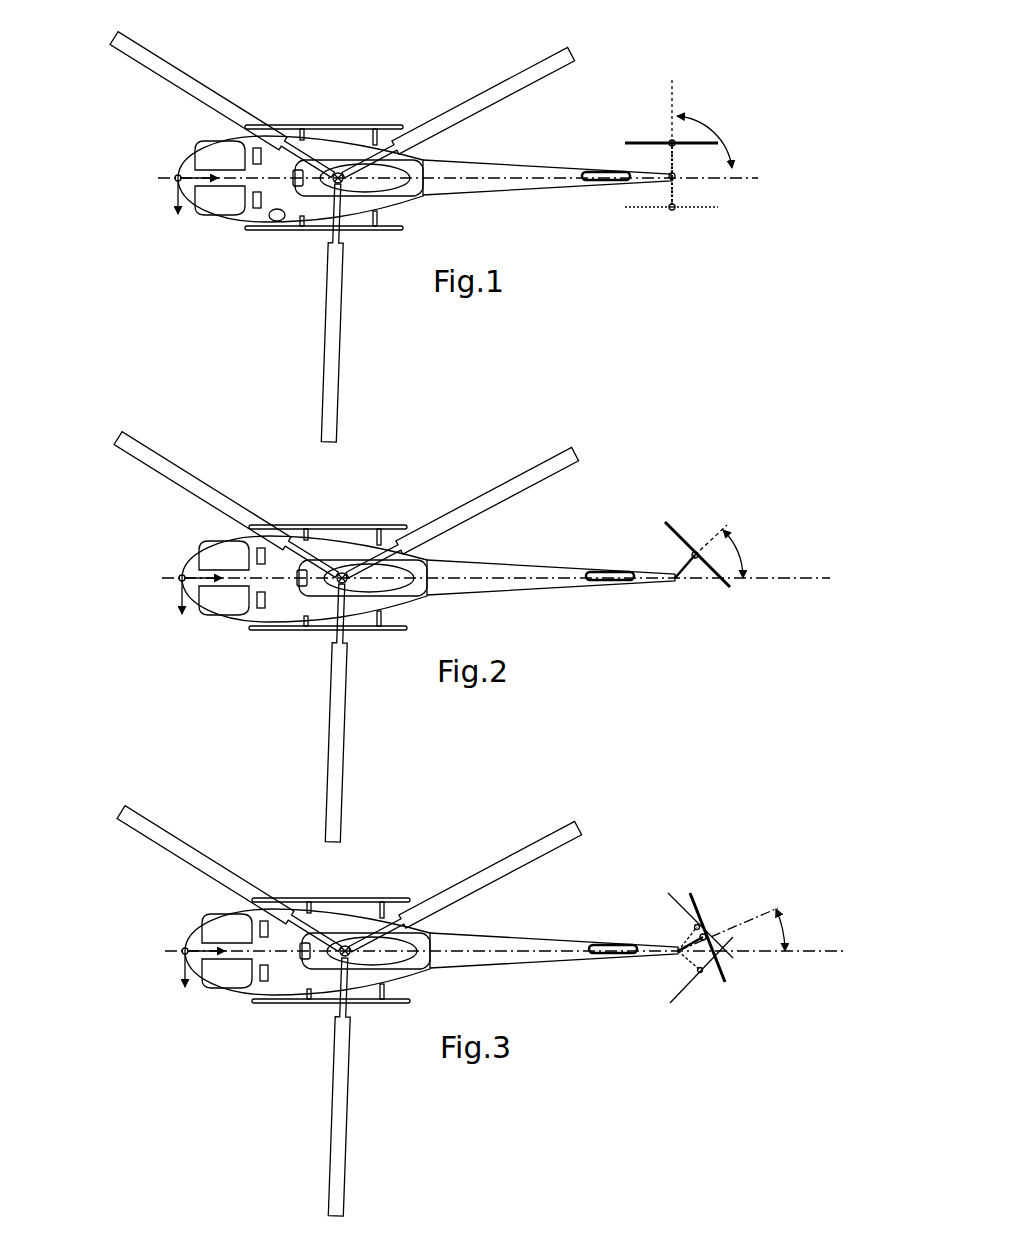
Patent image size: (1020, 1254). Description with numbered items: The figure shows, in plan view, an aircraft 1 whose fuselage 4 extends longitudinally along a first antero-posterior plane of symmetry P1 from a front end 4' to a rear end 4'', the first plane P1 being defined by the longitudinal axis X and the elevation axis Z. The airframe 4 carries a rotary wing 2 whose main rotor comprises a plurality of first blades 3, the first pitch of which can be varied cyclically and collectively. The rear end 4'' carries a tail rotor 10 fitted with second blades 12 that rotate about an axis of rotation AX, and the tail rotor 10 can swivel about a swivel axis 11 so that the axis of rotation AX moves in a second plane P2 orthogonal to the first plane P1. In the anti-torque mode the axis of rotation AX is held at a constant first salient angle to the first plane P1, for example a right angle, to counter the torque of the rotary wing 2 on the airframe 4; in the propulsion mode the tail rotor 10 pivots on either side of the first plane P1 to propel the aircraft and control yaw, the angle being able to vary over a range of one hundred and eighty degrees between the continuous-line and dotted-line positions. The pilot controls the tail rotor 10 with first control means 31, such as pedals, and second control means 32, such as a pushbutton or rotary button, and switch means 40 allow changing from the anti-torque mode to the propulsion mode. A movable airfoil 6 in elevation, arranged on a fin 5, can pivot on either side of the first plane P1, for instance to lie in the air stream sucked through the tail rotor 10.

In FIG. 1, the aircraft 1 is at (145, 252).
In FIG. 2, the aircraft 1 is at (158, 664).
In FIG. 3, the aircraft 1 is at (163, 1065).
In FIG. 1, the rotary wing 2 is at (210, 52).
In FIG. 2, the rotary wing 2 is at (208, 448).
In FIG. 3, the rotary wing 2 is at (211, 828).
In FIG. 1, the first blade 3 is at (506, 80).
In FIG. 2, the first blade 3 is at (514, 470).
In FIG. 3, the first blade 3 is at (517, 846).
In FIG. 1, the fuselage 4 is at (393, 181).
In FIG. 1, the front end 4' is at (269, 181).
In FIG. 1, the rear end 4'' is at (547, 217).
In FIG. 1, the fin 5 is at (590, 186).
In FIG. 1, the movable airfoil 6 is at (628, 188).
In FIG. 2, the movable airfoil 6 is at (598, 583).
In FIG. 3, the movable airfoil 6 is at (600, 956).
In FIG. 1, the tail rotor 10 is at (716, 92).
In FIG. 2, the tail rotor 10 is at (720, 490).
In FIG. 1, the swivel axis 11 is at (666, 172).
In FIG. 2, the swivel axis 11 is at (677, 582).
In FIG. 3, the swivel axis 11 is at (680, 957).
In FIG. 1, the second blade 12 is at (657, 142).
In FIG. 2, the second blade 12 is at (684, 536).
In FIG. 1, the first control means 31 is at (266, 152).
In FIG. 1, the second control means 32 is at (258, 211).
In FIG. 1, the switch means 40 is at (283, 222).
In FIG. 1, the axis of rotation AX is at (670, 92).
In FIG. 1, the first antero-posterior plane of symmetry P1 is at (752, 170).
In FIG. 2, the first antero-posterior plane of symmetry P1 is at (800, 568).
In FIG. 3, the first antero-posterior plane of symmetry P1 is at (827, 945).
In FIG. 1, the second plane P2 is at (689, 25).
In FIG. 2, the second plane P2 is at (596, 514).
In FIG. 3, the second plane P2 is at (611, 884).